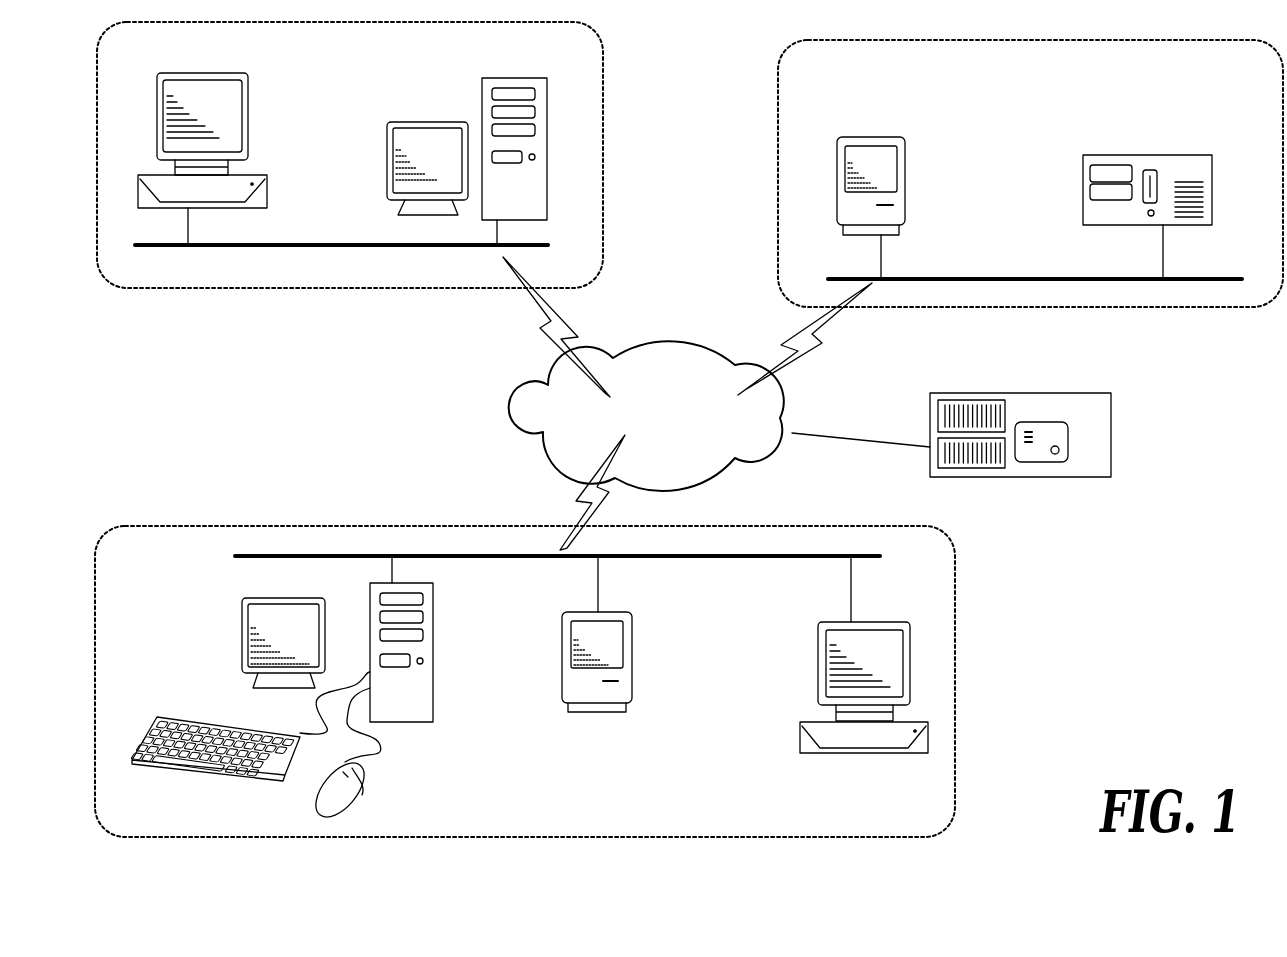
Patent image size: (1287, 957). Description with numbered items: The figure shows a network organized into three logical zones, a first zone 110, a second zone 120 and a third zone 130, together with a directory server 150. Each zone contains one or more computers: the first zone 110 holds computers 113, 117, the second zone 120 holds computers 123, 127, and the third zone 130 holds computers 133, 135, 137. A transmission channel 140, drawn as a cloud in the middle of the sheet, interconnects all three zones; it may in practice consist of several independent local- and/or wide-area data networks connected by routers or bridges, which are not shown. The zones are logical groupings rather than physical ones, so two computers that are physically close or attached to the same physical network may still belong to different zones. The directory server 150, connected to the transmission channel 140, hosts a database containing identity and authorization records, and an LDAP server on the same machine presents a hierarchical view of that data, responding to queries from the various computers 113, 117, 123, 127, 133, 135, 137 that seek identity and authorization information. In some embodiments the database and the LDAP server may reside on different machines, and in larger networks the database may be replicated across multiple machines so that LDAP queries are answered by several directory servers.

The zone 110 is at (158, 52).
The computer 113 is at (262, 175).
The computer 117 is at (482, 88).
The zone 120 is at (1258, 84).
The computer 123 is at (905, 156).
The computer 127 is at (1083, 200).
The zone 130 is at (925, 822).
The computer 133 is at (231, 641).
The computer 135 is at (562, 682).
The computer 137 is at (802, 721).
The transmission channel 140 is at (713, 470).
The directory server 150 is at (1098, 477).